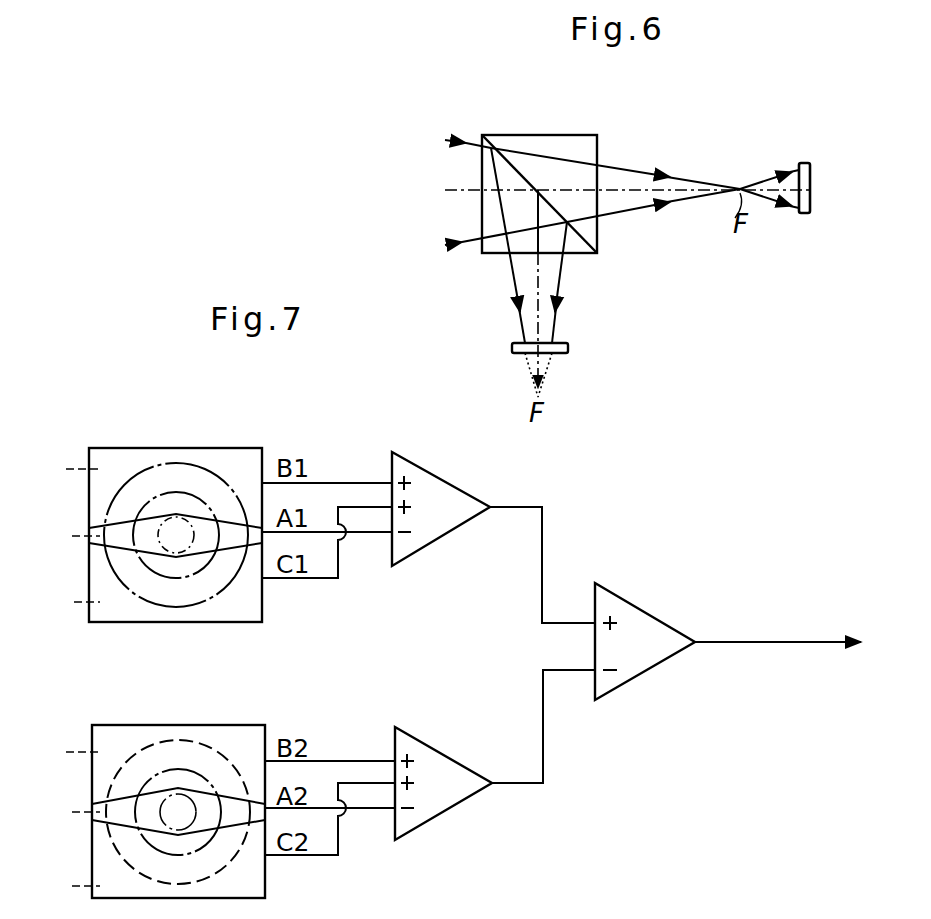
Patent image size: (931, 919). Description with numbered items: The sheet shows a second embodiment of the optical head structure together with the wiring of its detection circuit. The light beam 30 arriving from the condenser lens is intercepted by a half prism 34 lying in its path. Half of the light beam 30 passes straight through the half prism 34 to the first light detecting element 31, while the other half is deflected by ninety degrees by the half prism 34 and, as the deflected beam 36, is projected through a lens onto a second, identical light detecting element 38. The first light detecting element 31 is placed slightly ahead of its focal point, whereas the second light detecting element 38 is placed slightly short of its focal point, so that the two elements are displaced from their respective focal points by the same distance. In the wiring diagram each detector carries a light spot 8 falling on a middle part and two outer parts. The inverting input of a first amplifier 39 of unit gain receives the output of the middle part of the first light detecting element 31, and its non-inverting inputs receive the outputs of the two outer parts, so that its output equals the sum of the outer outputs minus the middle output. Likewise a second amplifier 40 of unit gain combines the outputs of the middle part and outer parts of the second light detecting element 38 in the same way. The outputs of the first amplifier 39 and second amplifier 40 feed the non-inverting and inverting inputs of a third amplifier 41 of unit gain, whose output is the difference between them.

In FIG. 6, the light beam 30 is at (448, 134).
In FIG. 6, the half prism 34 is at (540, 135).
In FIG. 6, the first light detecting element 31 is at (803, 163).
In FIG. 7, the first light detecting element 31 is at (189, 414).
In FIG. 6, the reflected light beam 36 is at (560, 284).
In FIG. 6, the second light detecting element 38 is at (568, 348).
In FIG. 7, the second light detecting element 38 is at (180, 695).
In FIG. 7, the light spot 8 is at (162, 490).
In FIG. 7, the first amplifier 39 is at (430, 468).
In FIG. 7, the second amplifier 40 is at (425, 743).
In FIG. 7, the third amplifier 41 is at (635, 604).